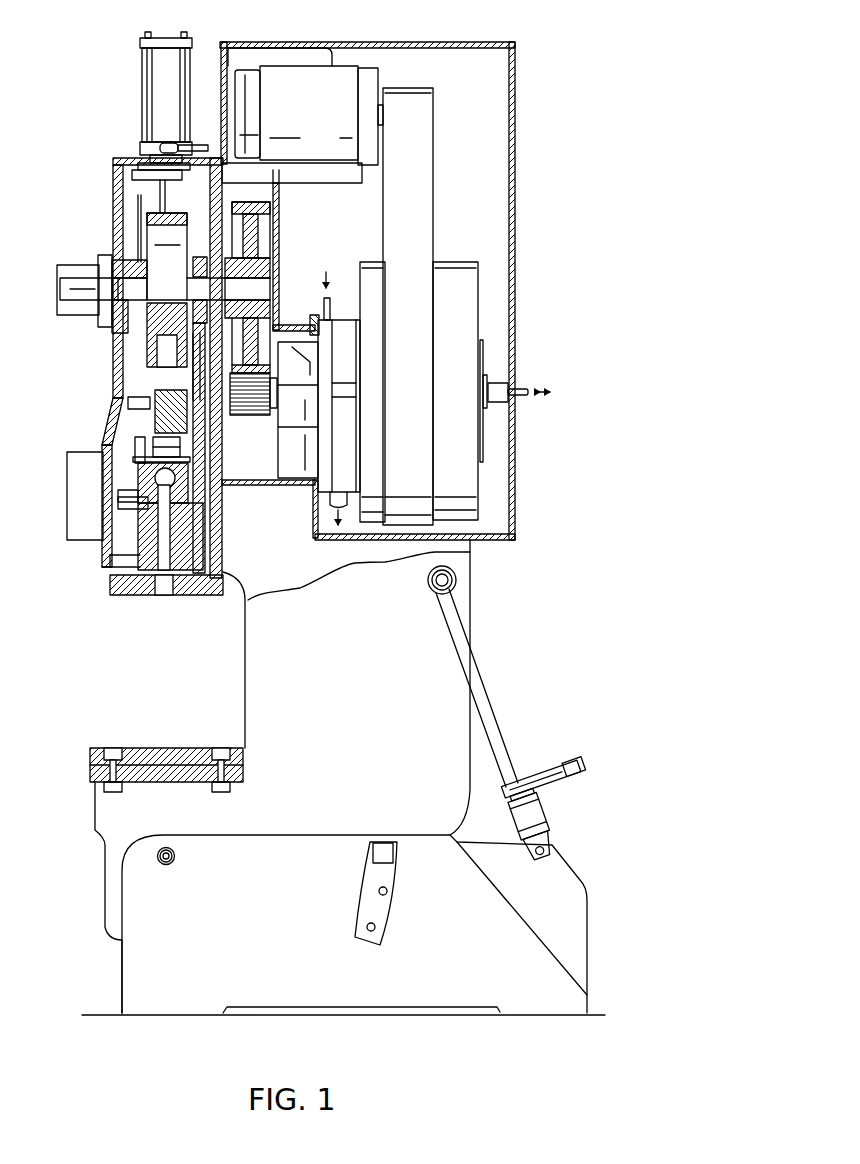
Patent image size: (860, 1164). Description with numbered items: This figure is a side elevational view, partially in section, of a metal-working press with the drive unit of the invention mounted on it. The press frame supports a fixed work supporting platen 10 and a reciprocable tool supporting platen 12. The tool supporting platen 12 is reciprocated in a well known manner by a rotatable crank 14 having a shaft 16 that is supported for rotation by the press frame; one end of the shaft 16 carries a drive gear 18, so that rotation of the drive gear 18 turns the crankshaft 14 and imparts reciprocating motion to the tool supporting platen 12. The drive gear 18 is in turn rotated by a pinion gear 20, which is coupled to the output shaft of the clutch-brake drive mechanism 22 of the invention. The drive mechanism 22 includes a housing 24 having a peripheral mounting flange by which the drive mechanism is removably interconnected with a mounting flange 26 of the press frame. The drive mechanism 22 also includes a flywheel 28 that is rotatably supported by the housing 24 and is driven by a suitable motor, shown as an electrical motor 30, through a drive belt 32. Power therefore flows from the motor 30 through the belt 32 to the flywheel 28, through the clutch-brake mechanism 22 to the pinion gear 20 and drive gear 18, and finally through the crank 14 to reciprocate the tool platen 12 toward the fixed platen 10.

The fixed work supporting platen 10 is at (90, 760).
The reciprocable tool supporting platen 12 is at (112, 592).
The rotatable crank 14 is at (160, 248).
The shaft 16 is at (72, 318).
The drive gear 18 is at (255, 238).
The pinion gear 20 is at (250, 418).
The clutch-brake drive mechanism 22 is at (343, 288).
The housing 24 is at (306, 430).
The mounting flange 26 is at (316, 315).
The flywheel 28 is at (470, 296).
The electrical motor 30 is at (345, 72).
The drive belt 32 is at (425, 208).